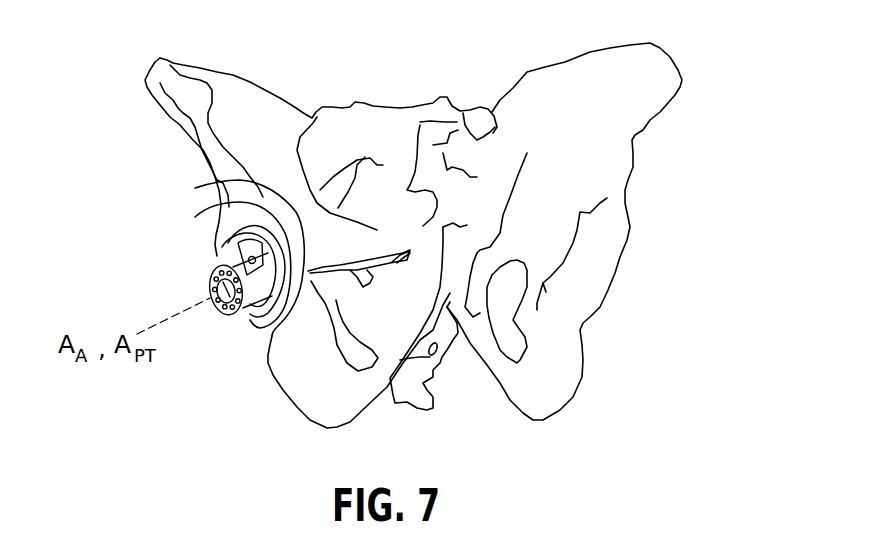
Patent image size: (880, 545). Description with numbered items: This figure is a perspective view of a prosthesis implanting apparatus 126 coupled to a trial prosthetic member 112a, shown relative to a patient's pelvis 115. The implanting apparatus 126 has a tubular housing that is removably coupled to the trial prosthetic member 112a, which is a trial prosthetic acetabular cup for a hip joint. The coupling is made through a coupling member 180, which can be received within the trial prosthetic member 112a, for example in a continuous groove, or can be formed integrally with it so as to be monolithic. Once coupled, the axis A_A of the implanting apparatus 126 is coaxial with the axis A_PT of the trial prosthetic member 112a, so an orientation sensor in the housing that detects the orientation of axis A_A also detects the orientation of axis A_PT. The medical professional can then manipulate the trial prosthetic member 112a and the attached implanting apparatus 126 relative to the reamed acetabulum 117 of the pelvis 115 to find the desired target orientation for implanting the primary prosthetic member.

The pelvis 115 is at (637, 87).
The reamed acetabulum 117 is at (195, 188).
The trial prosthetic member 112a is at (195, 217).
The coupling member 180 is at (222, 247).
The implanting apparatus 126 is at (213, 290).